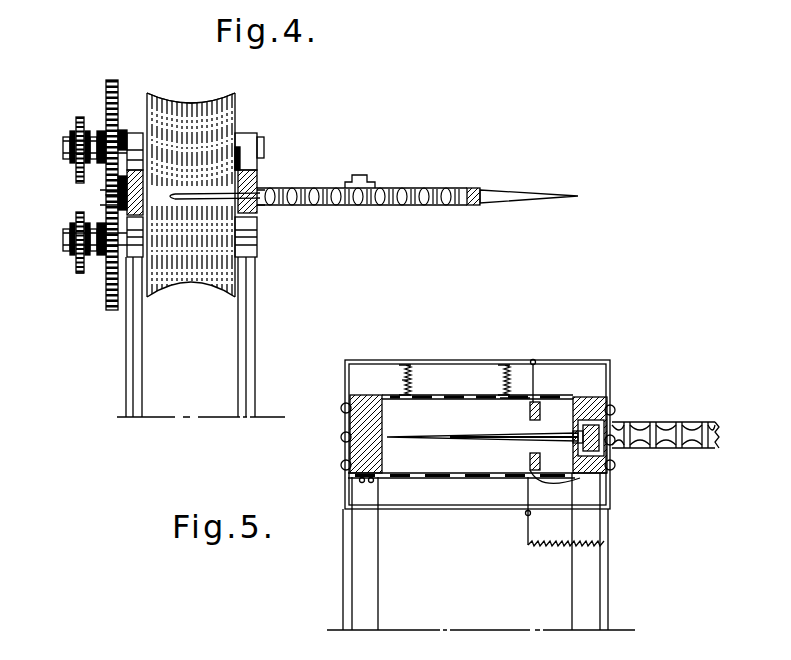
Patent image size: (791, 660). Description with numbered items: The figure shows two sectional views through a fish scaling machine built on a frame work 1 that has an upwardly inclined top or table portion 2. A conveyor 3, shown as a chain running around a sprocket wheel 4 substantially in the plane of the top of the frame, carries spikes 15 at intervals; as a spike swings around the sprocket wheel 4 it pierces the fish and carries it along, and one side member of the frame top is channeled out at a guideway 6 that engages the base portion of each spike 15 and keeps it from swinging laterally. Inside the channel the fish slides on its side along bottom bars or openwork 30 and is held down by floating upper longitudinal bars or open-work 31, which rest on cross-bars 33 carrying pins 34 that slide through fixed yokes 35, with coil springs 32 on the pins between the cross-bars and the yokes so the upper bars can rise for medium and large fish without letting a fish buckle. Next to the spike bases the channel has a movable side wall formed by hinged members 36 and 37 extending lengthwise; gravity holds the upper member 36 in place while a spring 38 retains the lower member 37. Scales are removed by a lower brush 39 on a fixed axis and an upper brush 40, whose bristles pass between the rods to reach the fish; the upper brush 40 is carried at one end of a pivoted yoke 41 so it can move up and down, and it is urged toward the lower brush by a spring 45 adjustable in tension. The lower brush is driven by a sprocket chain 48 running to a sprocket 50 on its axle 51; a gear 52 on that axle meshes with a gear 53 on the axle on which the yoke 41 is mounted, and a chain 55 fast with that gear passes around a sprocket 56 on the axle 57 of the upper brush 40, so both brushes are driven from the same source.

In FIG. 4, the frame work 1 is at (257, 330).
In FIG. 5, the frame work 1 is at (608, 566).
In FIG. 4, the top or table portion 2 is at (107, 205).
In FIG. 5, the top or table portion 2 is at (362, 398).
In FIG. 5, the conveyor 3 is at (612, 472).
In FIG. 4, the sprocket wheel 4 is at (407, 188).
In FIG. 5, the sprocket wheel 4 is at (677, 432).
In FIG. 5, the guideway 6 is at (581, 420).
In FIG. 4, the spike 15 is at (197, 193).
In FIG. 5, the spike 15 is at (455, 441).
In FIG. 5, the bars or openwork 30 is at (425, 478).
In FIG. 5, the longitudinal bars or open-work 31 is at (440, 397).
In FIG. 5, the coil springs 32 is at (402, 383).
In FIG. 5, the cross-bars 33 is at (480, 397).
In FIG. 5, the pins 34 is at (405, 367).
In FIG. 5, the fixed yokes 35 is at (612, 382).
In FIG. 5, the hinged member 36 is at (529, 412).
In FIG. 5, the hinged member 37 is at (529, 460).
In FIG. 5, the spring 38 is at (548, 545).
In FIG. 4, the brush 39 is at (193, 282).
In FIG. 4, the brush 40 is at (235, 107).
In FIG. 4, the yoke 41 is at (260, 158).
In FIG. 4, the spring 45 is at (136, 160).
In FIG. 4, the sprocket chain 48 is at (82, 275).
In FIG. 4, the sprocket 50 is at (74, 257).
In FIG. 4, the axle 51 is at (65, 240).
In FIG. 4, the gear 52 is at (110, 310).
In FIG. 4, the gear 53 is at (97, 123).
In FIG. 4, the chain 55 is at (80, 118).
In FIG. 4, the sprocket 56 is at (72, 138).
In FIG. 4, the axle 57 is at (63, 150).